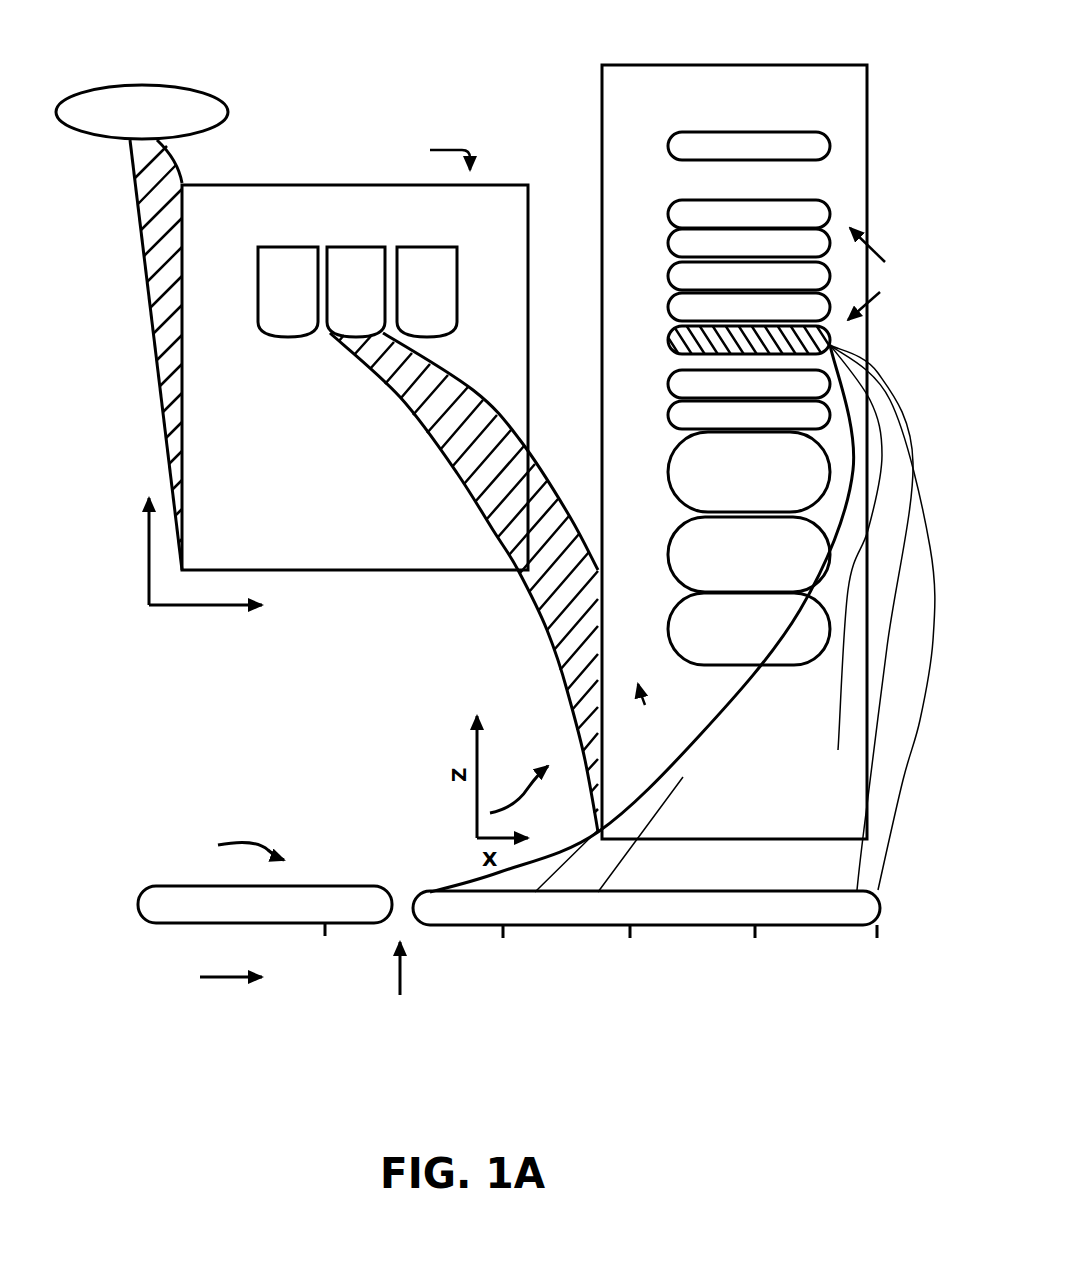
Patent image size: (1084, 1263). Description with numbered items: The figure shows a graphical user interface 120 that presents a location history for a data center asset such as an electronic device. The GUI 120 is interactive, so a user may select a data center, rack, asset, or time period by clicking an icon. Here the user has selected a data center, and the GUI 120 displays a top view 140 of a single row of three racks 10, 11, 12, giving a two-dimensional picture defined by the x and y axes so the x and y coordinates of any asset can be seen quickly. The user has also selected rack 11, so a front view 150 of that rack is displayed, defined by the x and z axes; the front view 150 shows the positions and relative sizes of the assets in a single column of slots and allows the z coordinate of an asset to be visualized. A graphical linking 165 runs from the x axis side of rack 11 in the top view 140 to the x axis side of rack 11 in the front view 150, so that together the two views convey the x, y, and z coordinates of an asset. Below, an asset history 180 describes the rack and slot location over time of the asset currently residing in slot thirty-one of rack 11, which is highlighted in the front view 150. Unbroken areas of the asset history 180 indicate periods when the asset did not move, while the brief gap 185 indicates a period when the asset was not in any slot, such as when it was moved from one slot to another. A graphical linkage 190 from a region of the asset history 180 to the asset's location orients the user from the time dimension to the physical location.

The graphical user interface 120 is at (493, 87).
The top view 140 is at (247, 228).
The rack 10 is at (302, 308).
The rack 11 is at (369, 308).
The rack 12 is at (440, 308).
The graphical linking 165 is at (457, 472).
The front view 150 is at (882, 124).
The asset history 180 is at (214, 833).
The gap 185 is at (400, 1000).
The graphical linkage 190 is at (905, 790).